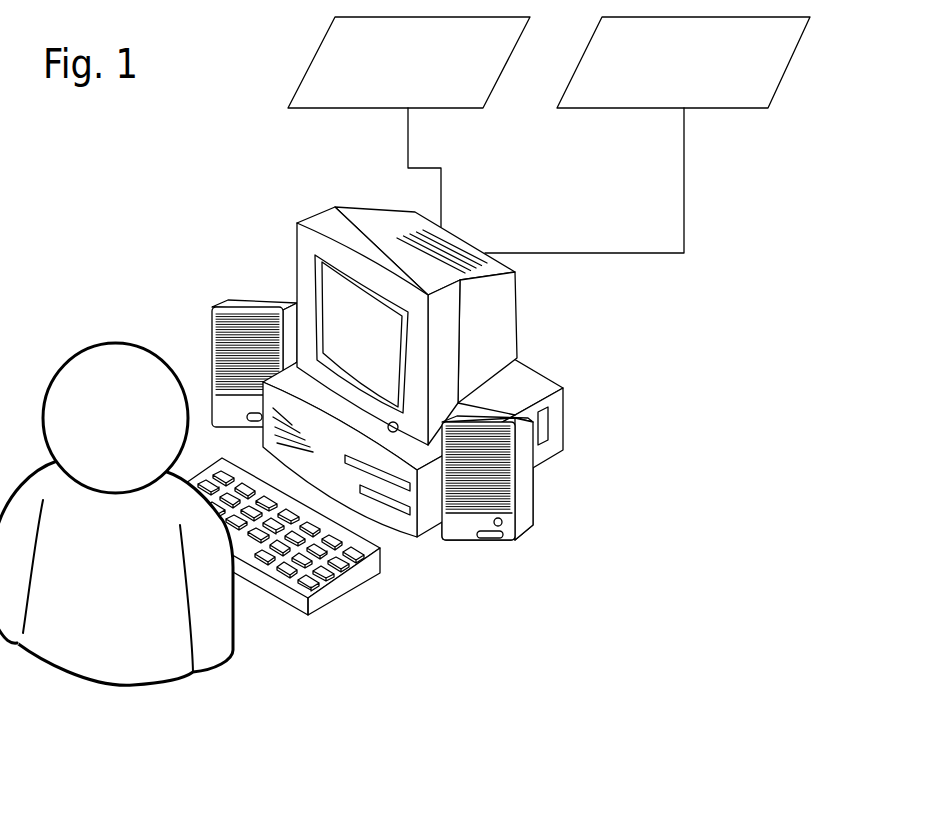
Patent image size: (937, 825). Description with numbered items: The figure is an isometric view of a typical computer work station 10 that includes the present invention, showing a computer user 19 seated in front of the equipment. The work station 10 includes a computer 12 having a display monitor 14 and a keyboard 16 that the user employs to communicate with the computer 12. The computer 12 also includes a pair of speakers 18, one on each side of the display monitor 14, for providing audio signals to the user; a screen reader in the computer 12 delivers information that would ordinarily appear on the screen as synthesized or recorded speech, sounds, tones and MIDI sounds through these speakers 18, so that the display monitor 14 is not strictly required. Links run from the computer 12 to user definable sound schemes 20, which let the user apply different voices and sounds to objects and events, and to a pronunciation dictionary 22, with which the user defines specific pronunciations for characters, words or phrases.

The computer work station 10 is at (532, 652).
The computer 12 is at (548, 378).
The display monitor 14 is at (350, 213).
The keyboard 16 is at (358, 588).
The speakers 18 is at (245, 300).
The user 19 is at (230, 657).
The sound schemes 20 is at (740, 108).
The pronunciation dictionary 22 is at (470, 108).